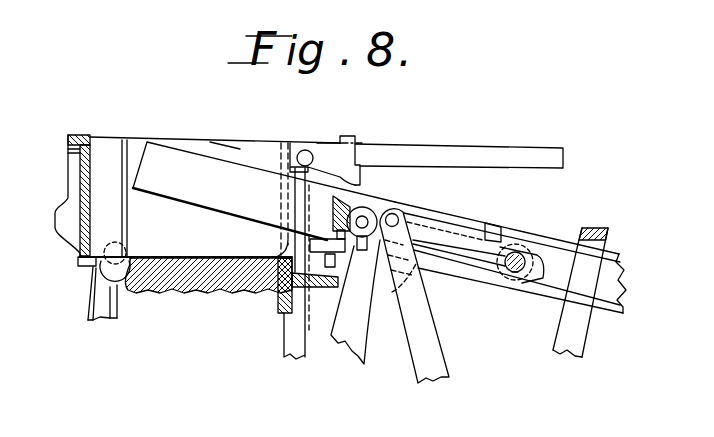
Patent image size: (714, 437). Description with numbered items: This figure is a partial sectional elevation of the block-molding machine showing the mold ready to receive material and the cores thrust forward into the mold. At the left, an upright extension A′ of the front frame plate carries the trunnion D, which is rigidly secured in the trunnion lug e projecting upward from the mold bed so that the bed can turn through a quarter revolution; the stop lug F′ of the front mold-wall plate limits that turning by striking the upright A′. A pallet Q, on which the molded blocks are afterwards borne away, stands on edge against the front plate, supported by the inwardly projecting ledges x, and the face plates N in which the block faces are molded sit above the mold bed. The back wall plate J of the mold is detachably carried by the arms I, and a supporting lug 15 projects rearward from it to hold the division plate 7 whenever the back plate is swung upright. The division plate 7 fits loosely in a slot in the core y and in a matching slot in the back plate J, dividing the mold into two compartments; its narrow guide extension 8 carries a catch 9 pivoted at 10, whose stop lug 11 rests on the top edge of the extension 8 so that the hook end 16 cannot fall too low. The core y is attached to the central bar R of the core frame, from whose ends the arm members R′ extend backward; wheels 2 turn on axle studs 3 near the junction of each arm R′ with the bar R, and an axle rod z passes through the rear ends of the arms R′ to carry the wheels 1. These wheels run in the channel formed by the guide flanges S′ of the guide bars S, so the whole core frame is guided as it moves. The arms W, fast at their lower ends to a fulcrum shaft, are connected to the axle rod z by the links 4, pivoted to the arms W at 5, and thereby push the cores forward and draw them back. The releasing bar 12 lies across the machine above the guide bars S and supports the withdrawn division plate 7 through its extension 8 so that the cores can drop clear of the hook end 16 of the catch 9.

The wheel 1 is at (520, 252).
The wheels 2 is at (371, 208).
The axle studs 3 is at (336, 258).
The links 4 is at (445, 236).
The pivot connection 5 is at (396, 215).
The division plate 7 is at (210, 141).
The guide extension 8 is at (388, 145).
The catch or hook 9 is at (323, 150).
The pivot 10 is at (305, 152).
The stop lug 11 is at (350, 143).
The releasing bar 12 is at (594, 241).
The supporting lug 15 is at (323, 281).
The hook end 16 is at (346, 160).
The stop lug F′ is at (80, 161).
The pallet Q is at (108, 215).
The ledges x is at (78, 260).
The core y is at (213, 198).
The axle rod z is at (515, 277).
The trunnion D is at (107, 262).
The trunnion lug e is at (115, 273).
The upright extension A′ is at (100, 318).
The guide bars S is at (118, 313).
The guide flanges S′ is at (609, 258).
The face plates N is at (227, 287).
The arms I is at (284, 333).
The back wall plate J is at (287, 247).
The central bar member R is at (333, 210).
The arm members R′ is at (368, 250).
The arms W is at (432, 313).